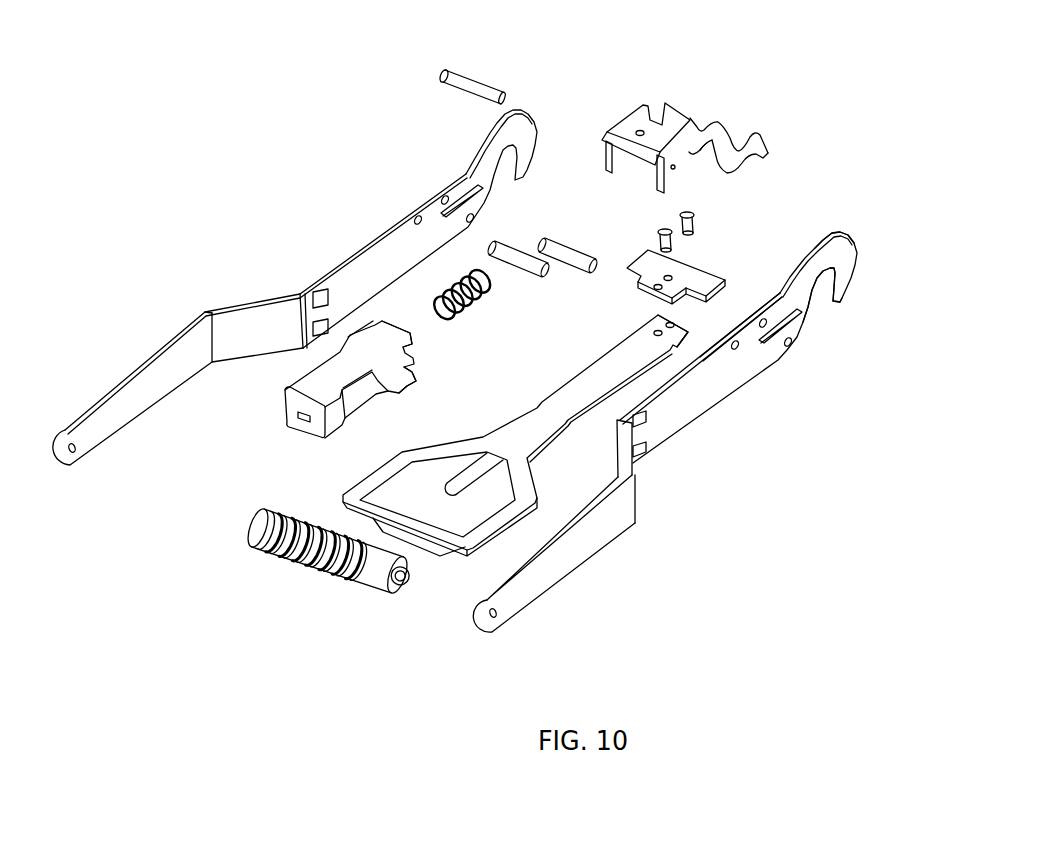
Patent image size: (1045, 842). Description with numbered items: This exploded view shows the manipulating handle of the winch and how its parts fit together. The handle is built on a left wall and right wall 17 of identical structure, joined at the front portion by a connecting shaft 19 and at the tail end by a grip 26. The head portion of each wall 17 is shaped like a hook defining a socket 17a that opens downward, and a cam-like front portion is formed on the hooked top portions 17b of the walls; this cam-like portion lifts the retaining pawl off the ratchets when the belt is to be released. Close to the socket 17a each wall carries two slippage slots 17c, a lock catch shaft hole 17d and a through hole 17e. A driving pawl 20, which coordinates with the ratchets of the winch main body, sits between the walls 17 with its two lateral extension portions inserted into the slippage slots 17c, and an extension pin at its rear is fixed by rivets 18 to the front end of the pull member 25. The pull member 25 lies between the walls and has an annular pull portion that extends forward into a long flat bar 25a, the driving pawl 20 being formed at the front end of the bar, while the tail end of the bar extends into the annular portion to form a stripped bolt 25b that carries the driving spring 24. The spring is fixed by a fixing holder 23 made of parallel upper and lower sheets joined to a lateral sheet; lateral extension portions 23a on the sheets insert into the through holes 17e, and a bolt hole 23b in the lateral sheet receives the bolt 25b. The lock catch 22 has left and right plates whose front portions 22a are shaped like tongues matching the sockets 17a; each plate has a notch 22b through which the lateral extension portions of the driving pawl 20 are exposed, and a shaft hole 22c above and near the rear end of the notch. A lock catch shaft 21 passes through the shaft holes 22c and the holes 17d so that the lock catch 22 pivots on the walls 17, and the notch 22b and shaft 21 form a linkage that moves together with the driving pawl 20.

The left wall and right wall 17 is at (248, 325).
The socket 17a is at (830, 305).
The hook tip 17b is at (827, 233).
The slippage slots 17c is at (785, 325).
The lock catch shaft hole 17d is at (732, 330).
The through hole 17e is at (643, 422).
The rivets 18 is at (660, 243).
The connecting shaft 19 is at (508, 243).
The driving pawl 20 is at (693, 277).
The lock catch shaft 21 is at (457, 83).
The lock catch 22 is at (696, 108).
The front portions 22a is at (764, 157).
The notch 22b is at (692, 172).
The shaft hole 22c is at (673, 168).
The fixing holder 23 is at (305, 391).
The lateral extension portions 23a is at (365, 338).
The bolt hole 23b is at (297, 413).
The driving spring 24 is at (455, 312).
The pull member 25 is at (515, 435).
The long flat bar 25a is at (607, 387).
The stripped bolt 25b is at (467, 478).
The grip 26 is at (328, 567).